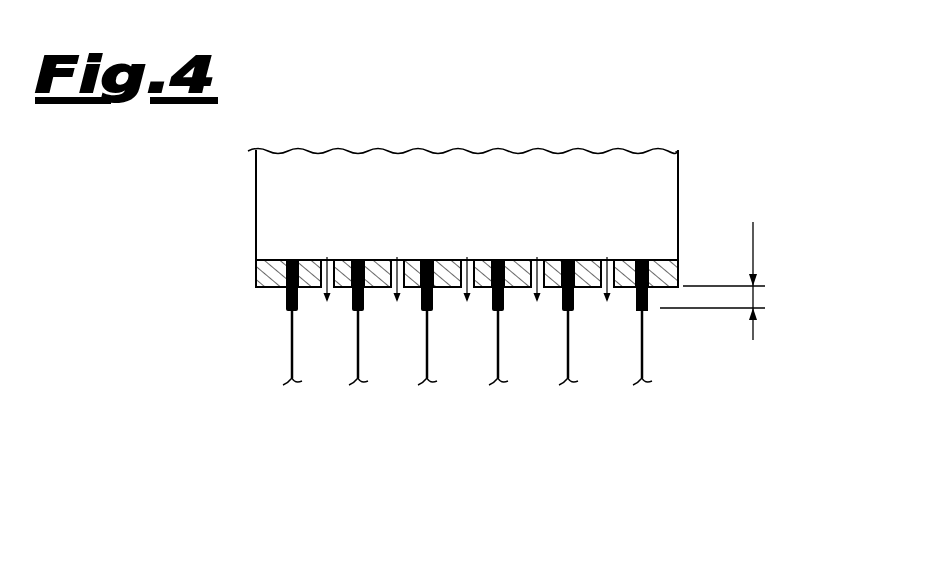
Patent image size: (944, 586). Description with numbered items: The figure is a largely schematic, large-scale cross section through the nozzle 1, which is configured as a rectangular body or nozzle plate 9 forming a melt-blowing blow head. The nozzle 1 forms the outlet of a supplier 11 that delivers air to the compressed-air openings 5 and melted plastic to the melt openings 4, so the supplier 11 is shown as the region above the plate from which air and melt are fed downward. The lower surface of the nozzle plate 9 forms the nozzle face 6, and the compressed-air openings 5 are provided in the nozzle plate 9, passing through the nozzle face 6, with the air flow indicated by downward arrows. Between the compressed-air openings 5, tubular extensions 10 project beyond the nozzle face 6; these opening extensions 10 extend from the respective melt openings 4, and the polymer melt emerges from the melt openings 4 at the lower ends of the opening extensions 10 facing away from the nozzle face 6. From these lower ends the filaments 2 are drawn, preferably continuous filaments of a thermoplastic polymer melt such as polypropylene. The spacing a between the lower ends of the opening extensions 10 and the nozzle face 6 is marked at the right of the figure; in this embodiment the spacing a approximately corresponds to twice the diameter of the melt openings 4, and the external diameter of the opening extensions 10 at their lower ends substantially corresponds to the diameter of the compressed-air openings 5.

The nozzle 1 is at (643, 118).
The filaments 2 is at (292, 362).
The melt openings 4 is at (651, 316).
The compressed-air openings 5 is at (337, 307).
The nozzle face 6 is at (272, 293).
The nozzle plate 9 is at (430, 355).
The tubular extensions 10 is at (638, 300).
The supplier 11 is at (278, 207).
The spacing a is at (753, 297).